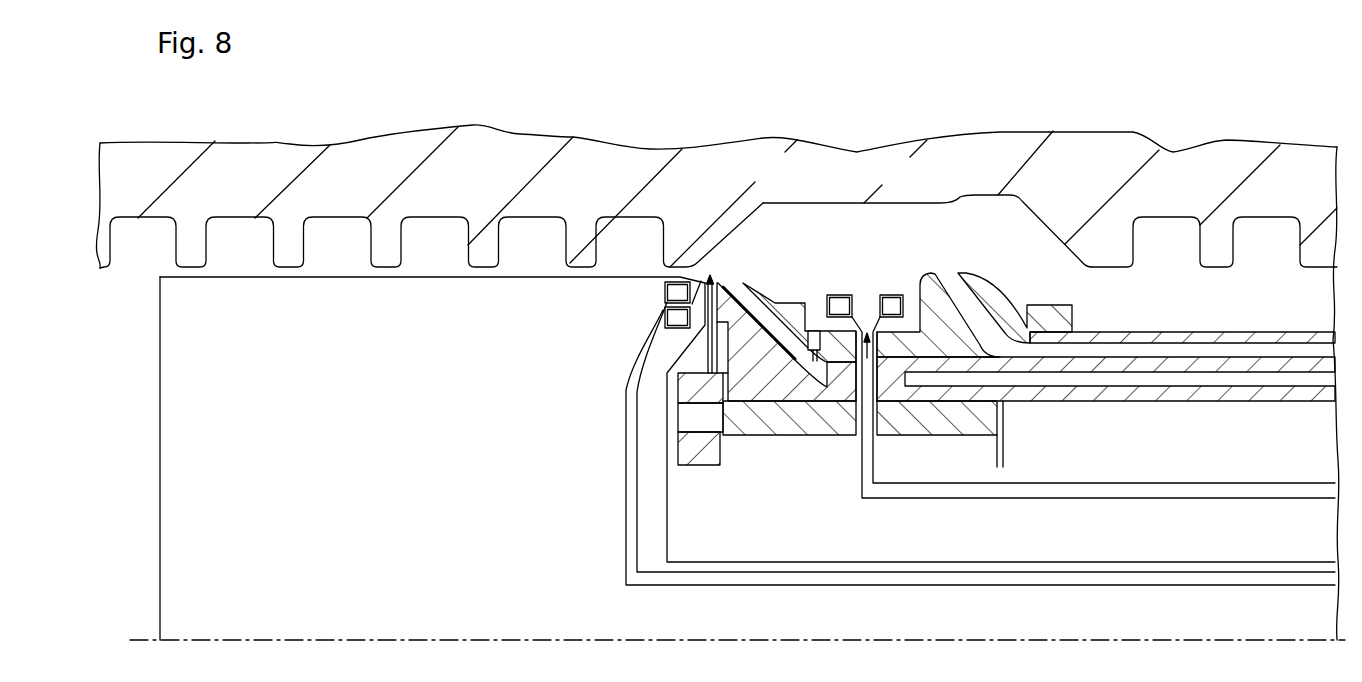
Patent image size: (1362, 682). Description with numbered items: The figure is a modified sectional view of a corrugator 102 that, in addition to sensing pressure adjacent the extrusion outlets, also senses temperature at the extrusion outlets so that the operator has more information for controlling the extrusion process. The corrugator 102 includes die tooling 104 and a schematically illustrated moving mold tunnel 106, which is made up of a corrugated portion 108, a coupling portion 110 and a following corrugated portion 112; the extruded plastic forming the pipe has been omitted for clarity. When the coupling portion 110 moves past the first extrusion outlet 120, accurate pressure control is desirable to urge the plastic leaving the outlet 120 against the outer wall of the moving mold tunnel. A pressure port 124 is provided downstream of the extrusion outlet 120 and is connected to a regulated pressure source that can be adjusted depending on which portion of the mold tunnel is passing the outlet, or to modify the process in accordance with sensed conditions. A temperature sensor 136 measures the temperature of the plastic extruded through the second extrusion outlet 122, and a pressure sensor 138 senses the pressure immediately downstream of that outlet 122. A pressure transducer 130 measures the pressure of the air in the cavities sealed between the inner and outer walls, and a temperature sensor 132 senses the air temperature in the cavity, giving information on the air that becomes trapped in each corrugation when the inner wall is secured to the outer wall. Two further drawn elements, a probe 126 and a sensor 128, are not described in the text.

The modified corrugator 102 is at (878, 114).
The die tooling 104 is at (530, 500).
The moving mold tunnel 106 is at (525, 210).
The corrugated portion 108 is at (446, 268).
The coupling portion 110 is at (824, 220).
The following corrugated portion 112 is at (1190, 262).
The first extrusion outlet 120 is at (923, 278).
The extrusion outlet 122 is at (720, 283).
The pressure port 124 is at (863, 313).
The clearance probe 126 is at (714, 268).
The sensor 128 is at (815, 318).
The pressure transducer 130 is at (838, 295).
The temperature sensor 132 is at (892, 295).
The temperature sensor 136 is at (667, 325).
The pressure sensor 138 is at (665, 299).